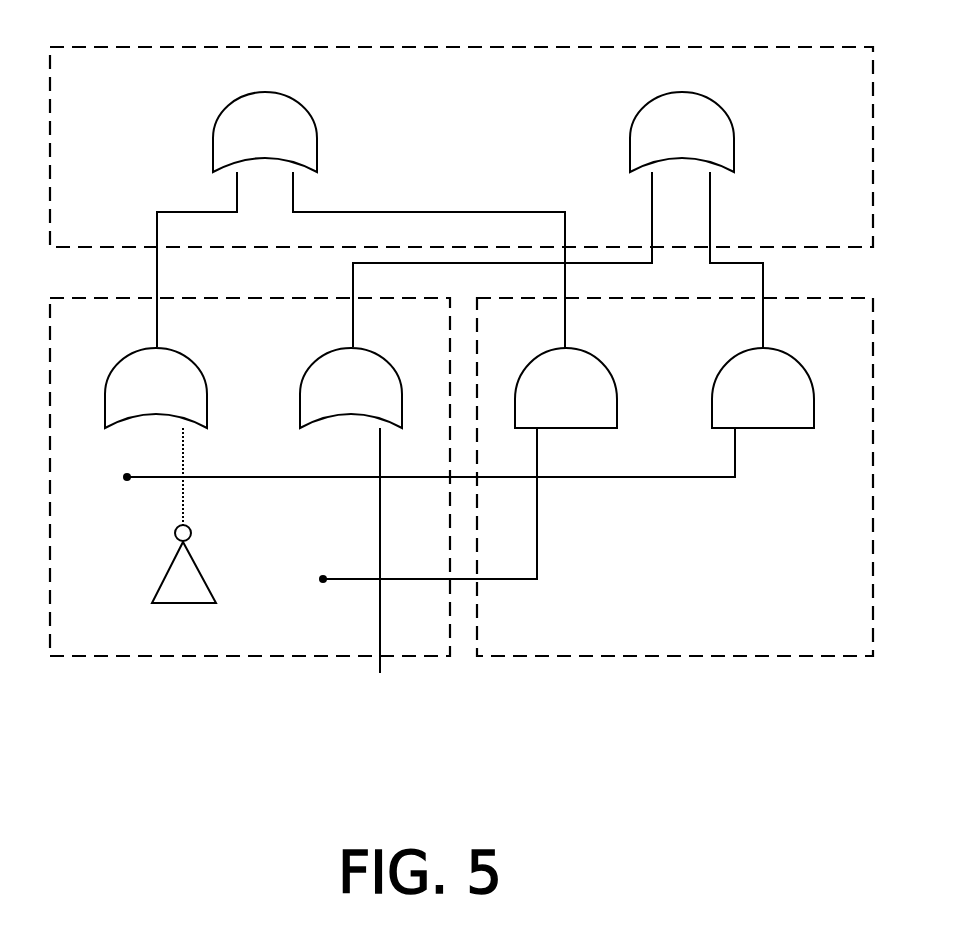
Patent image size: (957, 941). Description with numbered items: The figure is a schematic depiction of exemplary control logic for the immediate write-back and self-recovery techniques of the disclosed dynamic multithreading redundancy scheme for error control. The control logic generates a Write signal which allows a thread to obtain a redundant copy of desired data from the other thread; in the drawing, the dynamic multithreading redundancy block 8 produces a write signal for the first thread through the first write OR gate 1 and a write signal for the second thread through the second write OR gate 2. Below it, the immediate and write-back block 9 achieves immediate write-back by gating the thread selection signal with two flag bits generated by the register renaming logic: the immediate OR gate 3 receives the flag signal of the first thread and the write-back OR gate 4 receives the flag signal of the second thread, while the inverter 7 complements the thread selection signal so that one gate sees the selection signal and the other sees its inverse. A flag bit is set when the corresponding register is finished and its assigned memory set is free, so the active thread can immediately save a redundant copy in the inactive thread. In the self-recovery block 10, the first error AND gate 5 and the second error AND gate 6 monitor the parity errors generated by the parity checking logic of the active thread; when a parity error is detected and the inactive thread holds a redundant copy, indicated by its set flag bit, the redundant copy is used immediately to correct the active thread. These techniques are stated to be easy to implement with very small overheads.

The T1 write OR gate 1 is at (265, 92).
The T2 write OR gate 2 is at (682, 92).
The immediate OR gate (Flag T1) 3 is at (127, 428).
The write-back OR gate (Flag T2) 4 is at (323, 428).
The Error T1 AND gate 5 is at (593, 428).
The Error T2 AND gate 6 is at (792, 428).
The inverter (thread selection) 7 is at (183, 603).
The DMR block 8 is at (461, 147).
The Immediate / Write-back block 9 is at (250, 477).
The Self-recovery block 10 is at (675, 477).